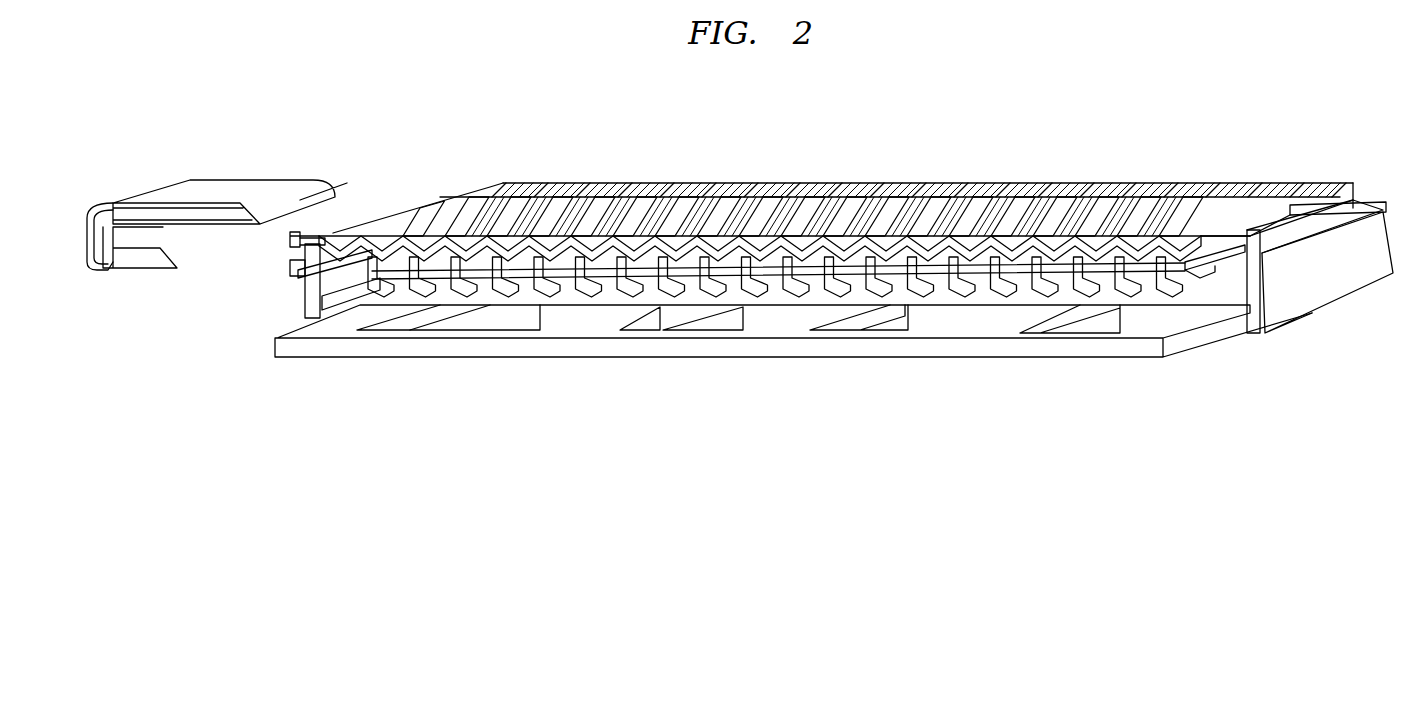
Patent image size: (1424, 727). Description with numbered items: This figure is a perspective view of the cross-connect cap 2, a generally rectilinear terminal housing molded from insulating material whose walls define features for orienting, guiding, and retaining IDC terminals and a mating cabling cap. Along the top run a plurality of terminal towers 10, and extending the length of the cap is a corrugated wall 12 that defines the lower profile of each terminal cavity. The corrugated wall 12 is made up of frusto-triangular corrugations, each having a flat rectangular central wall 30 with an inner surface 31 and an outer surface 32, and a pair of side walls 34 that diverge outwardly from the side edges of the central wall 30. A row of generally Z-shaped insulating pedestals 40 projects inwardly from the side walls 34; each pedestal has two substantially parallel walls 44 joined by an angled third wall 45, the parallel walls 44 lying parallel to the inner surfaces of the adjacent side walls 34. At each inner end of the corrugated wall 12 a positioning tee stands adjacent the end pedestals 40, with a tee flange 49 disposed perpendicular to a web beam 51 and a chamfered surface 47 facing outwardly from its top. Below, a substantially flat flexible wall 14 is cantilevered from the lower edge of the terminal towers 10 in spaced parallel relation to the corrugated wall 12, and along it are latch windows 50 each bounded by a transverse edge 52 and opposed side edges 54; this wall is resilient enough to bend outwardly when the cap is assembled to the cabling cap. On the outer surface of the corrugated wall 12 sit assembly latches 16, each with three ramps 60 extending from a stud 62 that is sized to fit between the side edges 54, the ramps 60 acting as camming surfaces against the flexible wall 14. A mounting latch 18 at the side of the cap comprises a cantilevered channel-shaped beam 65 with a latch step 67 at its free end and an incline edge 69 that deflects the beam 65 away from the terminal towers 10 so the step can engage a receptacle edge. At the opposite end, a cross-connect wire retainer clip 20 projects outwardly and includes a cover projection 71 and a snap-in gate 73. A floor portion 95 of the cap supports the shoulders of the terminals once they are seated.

The cross-connect cap 2 is at (557, 176).
The terminal towers 10 is at (718, 180).
The corrugated wall 12 is at (547, 200).
The flexible wall 14 is at (978, 359).
The assembly latch 16 is at (940, 194).
The mounting latch 18 is at (303, 270).
The cross-connect wire retainer clip 20 is at (217, 190).
The central wall 30 is at (964, 235).
The inner surface 31 is at (367, 258).
The outer surface 32 is at (838, 210).
The side walls 34 is at (1014, 234).
The insulating pedestals 40 is at (1143, 292).
The substantially parallel walls 44 is at (690, 280).
The third wall 45 is at (673, 278).
The chamfered surface 47 is at (304, 275).
The tee flange 49 is at (1198, 275).
The latch windows 50 is at (412, 324).
The web beam 51 is at (322, 250).
The transverse edge 52 is at (446, 326).
The side edges 54 is at (873, 333).
The ramps 60 is at (437, 200).
The stud 62 is at (958, 205).
The beam 65 is at (1323, 265).
The latch step 67 is at (1340, 195).
The incline edge 69 is at (1357, 212).
The cover projection 71 is at (210, 190).
The snap-in gate 73 is at (128, 238).
The floor portion 95 is at (1073, 294).